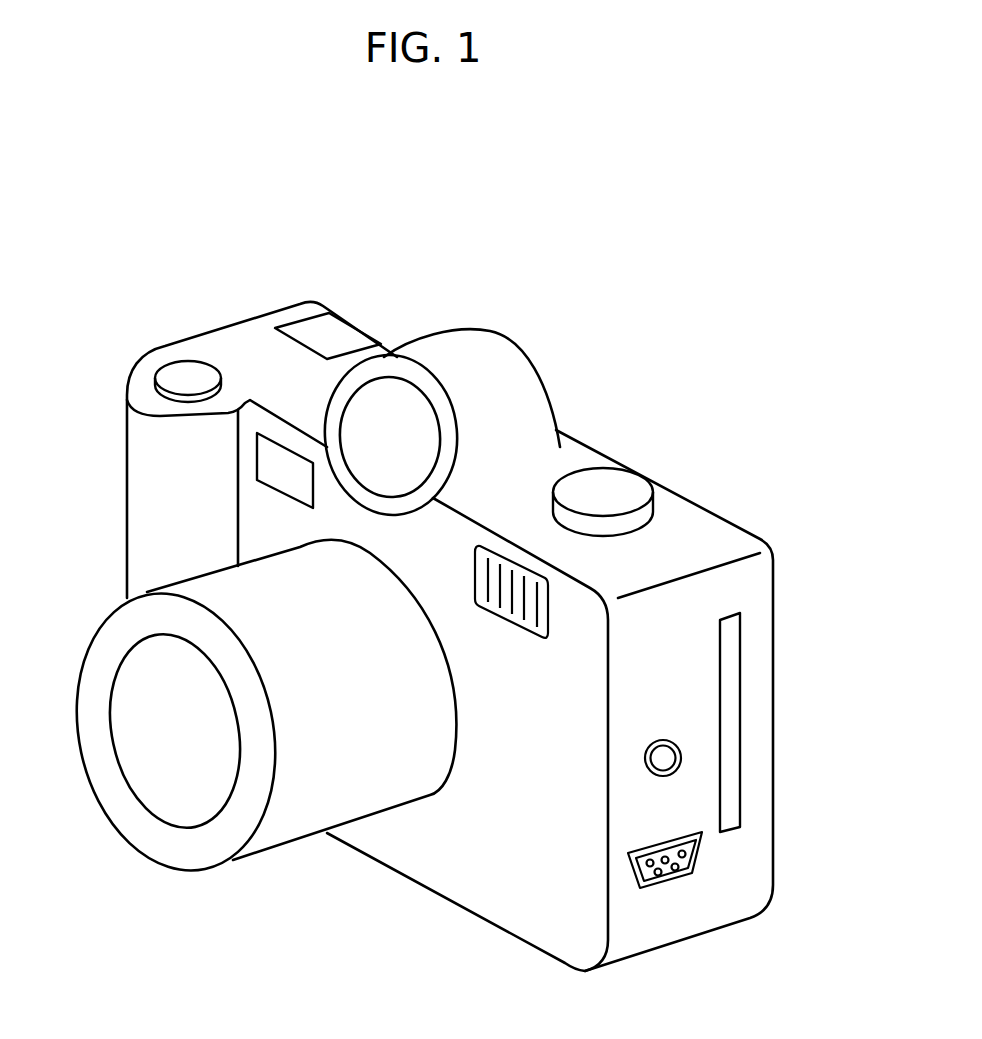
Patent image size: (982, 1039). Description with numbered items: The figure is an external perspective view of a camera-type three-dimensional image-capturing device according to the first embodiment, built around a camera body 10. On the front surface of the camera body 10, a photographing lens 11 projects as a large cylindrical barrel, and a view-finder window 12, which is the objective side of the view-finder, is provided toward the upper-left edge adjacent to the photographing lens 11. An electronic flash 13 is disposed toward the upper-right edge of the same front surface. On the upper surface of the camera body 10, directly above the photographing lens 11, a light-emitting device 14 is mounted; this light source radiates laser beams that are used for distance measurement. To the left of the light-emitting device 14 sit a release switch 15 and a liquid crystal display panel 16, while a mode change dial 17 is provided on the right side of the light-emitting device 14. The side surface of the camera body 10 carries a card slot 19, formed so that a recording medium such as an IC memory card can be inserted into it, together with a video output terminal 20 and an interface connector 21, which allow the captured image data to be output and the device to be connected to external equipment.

The camera body 10 is at (490, 875).
The photographing lens 11 is at (202, 847).
The view-finder window 12 is at (282, 469).
The electronic flash 13 is at (510, 622).
The light-emitting device 14 is at (472, 355).
The release switch 15 is at (188, 375).
The liquid crystal display panel 16 is at (316, 330).
The mode change dial 17 is at (603, 490).
The card slot 19 is at (730, 662).
The video output terminal 20 is at (665, 758).
The interface connector 21 is at (690, 860).